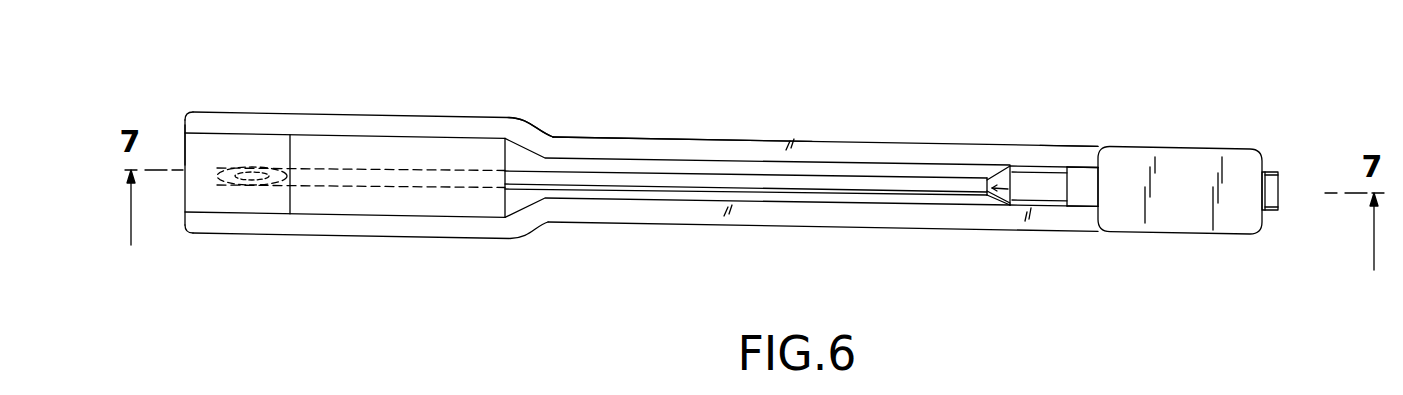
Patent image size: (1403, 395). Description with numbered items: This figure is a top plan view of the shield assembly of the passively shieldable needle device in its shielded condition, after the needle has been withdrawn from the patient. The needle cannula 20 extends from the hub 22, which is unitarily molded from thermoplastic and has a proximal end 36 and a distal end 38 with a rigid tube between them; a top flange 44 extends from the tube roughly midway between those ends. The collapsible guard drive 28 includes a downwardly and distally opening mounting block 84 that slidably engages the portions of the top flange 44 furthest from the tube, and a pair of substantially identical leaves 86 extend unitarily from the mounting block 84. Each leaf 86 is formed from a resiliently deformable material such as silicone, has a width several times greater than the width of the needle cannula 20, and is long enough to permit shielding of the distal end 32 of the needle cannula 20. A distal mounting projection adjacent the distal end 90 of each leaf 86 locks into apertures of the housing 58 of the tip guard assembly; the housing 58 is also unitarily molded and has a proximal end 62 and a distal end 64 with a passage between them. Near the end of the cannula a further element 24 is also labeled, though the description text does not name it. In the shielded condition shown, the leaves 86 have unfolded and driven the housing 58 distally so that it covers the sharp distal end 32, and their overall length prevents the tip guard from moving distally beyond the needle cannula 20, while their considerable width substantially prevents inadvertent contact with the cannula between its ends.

The needle cannula 20 is at (598, 172).
The hub 22 is at (1080, 146).
The tip 24 is at (997, 172).
The collapsible guard drive 28 is at (812, 140).
The distal end 32 is at (225, 173).
The proximal end 36 is at (1280, 177).
The distal end 38 is at (987, 197).
The top flange 44 is at (1082, 190).
The housing 58 is at (333, 138).
The proximal end 62 is at (507, 153).
The distal end 64 is at (185, 145).
The mounting block 84 is at (1177, 146).
The leaves 86 is at (687, 138).
The distal end 90 is at (192, 112).